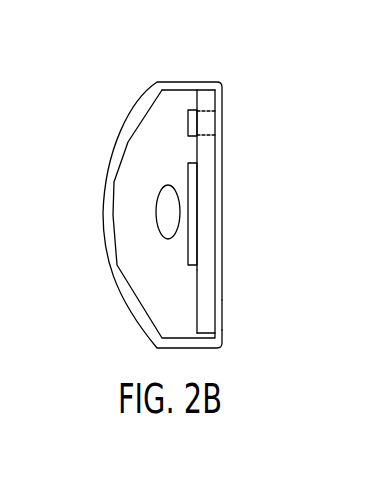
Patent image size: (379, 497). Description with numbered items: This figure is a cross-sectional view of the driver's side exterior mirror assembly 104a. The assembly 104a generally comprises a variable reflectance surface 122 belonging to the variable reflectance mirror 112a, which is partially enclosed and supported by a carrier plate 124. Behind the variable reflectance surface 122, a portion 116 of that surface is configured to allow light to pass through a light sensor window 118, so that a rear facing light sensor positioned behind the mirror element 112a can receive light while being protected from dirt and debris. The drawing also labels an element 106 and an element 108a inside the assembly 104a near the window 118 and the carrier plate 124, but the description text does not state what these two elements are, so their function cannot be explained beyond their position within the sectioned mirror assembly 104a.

The driver's side exterior mirror assembly 104a is at (111, 96).
The channel 106 is at (191, 128).
The insert member 108a is at (195, 217).
The variable reflectance mirror 112a is at (232, 320).
The portion 116 is at (219, 121).
The light sensor window 118 is at (206, 112).
The variable reflectance surface 122 is at (219, 206).
The carrier plate 124 is at (202, 287).